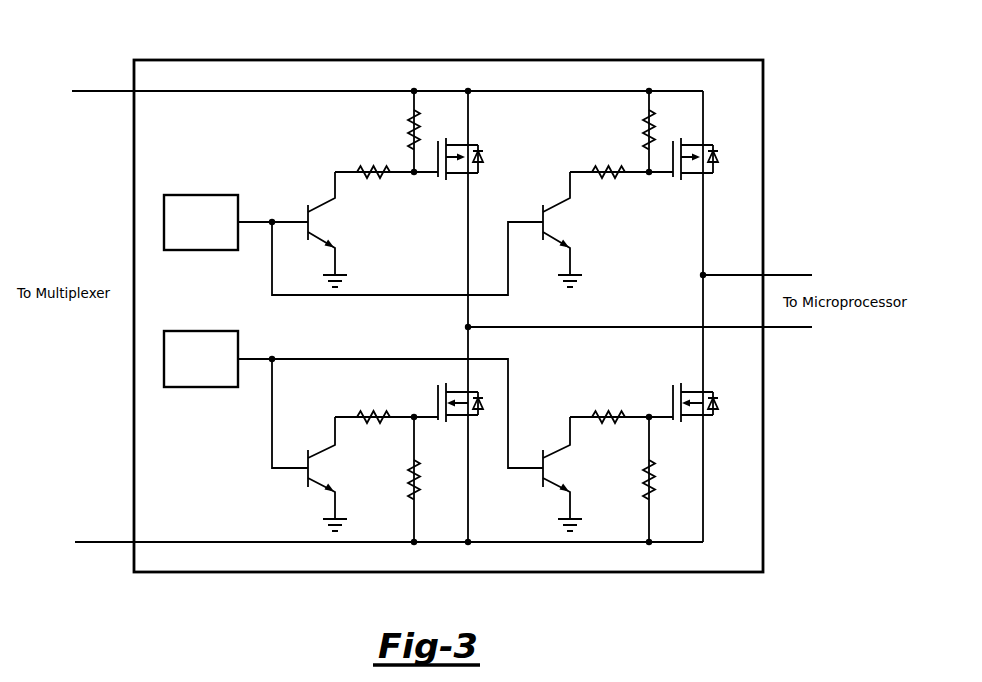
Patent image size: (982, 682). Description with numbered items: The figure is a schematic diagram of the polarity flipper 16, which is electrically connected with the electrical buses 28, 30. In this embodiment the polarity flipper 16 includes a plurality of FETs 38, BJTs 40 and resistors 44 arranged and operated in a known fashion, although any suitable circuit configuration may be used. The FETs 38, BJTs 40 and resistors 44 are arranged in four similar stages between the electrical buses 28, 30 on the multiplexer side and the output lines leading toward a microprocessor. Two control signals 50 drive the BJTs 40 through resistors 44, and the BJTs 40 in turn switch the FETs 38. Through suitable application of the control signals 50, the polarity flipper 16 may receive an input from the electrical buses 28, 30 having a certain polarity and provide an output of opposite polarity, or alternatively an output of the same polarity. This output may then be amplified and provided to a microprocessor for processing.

The polarity flipper 16 is at (502, 60).
The electrical bus 28 is at (92, 91).
The electrical bus 30 is at (95, 542).
The FET 38 is at (481, 144).
The BJT 40 is at (317, 234).
The resistor 44 is at (410, 133).
The control signal 50 is at (200, 195).